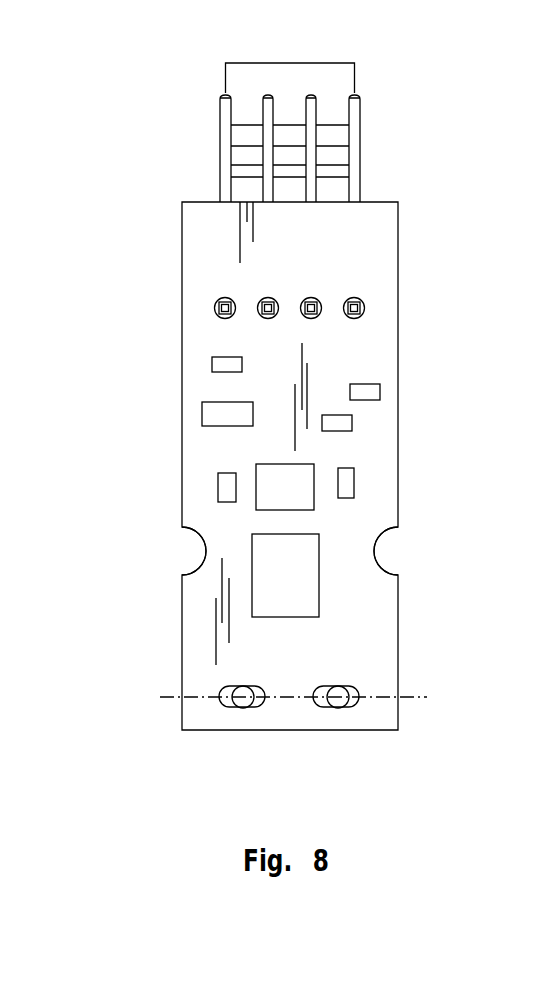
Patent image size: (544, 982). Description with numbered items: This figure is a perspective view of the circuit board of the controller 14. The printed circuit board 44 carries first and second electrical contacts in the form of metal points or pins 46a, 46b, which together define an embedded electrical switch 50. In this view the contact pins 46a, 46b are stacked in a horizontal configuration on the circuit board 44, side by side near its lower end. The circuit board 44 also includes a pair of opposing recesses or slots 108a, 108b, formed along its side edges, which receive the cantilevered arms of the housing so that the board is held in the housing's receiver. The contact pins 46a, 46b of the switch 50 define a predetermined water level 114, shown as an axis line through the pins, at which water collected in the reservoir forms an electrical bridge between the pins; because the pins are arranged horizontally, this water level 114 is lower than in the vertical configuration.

The controller 14 is at (450, 158).
The printed circuit board 44 is at (482, 297).
The recess or slot 108a is at (207, 552).
The recess or slot 108b is at (463, 557).
The electrical contact pin 46a is at (232, 690).
The electrical contact pin 46b is at (343, 692).
The embedded electrical switch 50 is at (338, 707).
The predetermined water level 114 is at (472, 742).